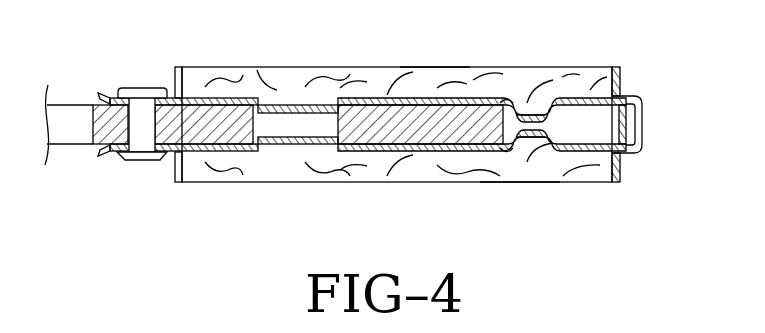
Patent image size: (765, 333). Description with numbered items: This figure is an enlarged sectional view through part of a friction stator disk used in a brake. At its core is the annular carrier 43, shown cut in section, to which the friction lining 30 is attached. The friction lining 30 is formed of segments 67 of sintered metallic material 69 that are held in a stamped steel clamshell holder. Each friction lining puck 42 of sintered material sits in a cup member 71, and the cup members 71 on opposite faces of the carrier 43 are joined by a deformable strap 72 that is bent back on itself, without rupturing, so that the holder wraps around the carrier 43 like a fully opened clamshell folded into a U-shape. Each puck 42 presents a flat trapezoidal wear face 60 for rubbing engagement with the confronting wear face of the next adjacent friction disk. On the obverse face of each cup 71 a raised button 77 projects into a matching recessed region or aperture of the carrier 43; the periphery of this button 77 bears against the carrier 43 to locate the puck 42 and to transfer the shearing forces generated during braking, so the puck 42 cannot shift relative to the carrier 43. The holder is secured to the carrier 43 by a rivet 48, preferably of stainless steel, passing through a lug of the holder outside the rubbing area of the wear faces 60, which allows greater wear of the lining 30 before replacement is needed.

The friction lining 30 is at (525, 182).
The friction lining puck 42 is at (293, 100).
The carrier 43 is at (63, 125).
The rivet 48 is at (140, 91).
The wear face 60 is at (348, 67).
The segment 67 is at (525, 67).
The sintered metallic material 69 is at (436, 67).
The cup member 71 is at (620, 73).
The deformable strap 72 is at (642, 125).
The button 77 is at (557, 118).